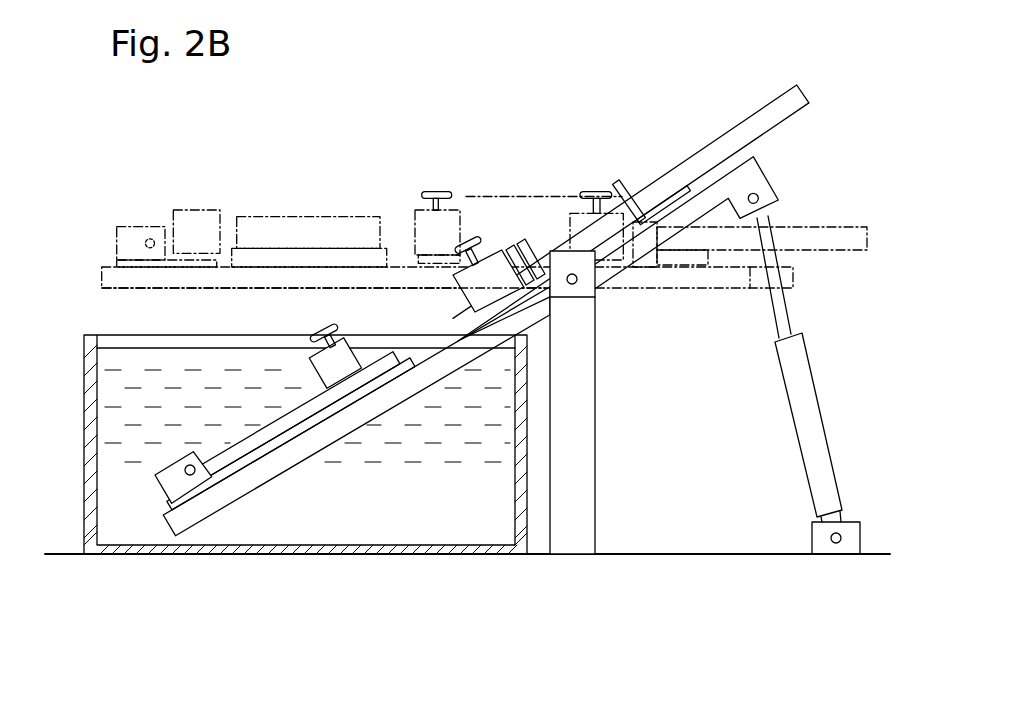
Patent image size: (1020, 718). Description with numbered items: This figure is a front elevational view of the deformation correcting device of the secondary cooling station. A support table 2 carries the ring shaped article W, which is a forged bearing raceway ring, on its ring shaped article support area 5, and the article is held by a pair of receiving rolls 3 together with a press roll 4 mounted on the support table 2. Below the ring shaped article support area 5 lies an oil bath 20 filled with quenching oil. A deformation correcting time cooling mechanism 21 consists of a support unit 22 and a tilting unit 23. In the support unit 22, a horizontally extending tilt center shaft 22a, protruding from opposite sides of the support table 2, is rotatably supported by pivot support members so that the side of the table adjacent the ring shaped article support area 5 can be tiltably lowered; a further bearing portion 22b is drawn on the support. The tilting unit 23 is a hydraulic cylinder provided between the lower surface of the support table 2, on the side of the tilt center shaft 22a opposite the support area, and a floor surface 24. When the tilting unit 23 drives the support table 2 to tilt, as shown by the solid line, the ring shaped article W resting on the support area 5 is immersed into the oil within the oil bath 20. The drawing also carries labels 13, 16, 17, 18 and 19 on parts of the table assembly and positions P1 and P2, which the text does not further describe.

The support table 2 is at (752, 170).
The receiving rolls 3 is at (210, 420).
The press roll 4 is at (342, 352).
The ring shaped article support area 5 is at (280, 420).
The inclined rail / arm 13 is at (715, 138).
The slide block 16 is at (491, 255).
The clamp handle 17 is at (474, 238).
The clamp handle 18 is at (316, 325).
The base plate (phantom) 19 is at (406, 278).
The oil bath 20 is at (86, 481).
The deformation correcting time cooling mechanism 21 is at (696, 385).
The support unit 22 is at (619, 402).
The tilt center shaft 22a is at (578, 280).
The post divider / bearing 22b is at (580, 293).
The tilting unit 23 is at (786, 373).
The floor surface 24 is at (882, 553).
The ring shaped article W is at (277, 402).
The first position P1 is at (415, 206).
The second position P2 is at (298, 233).